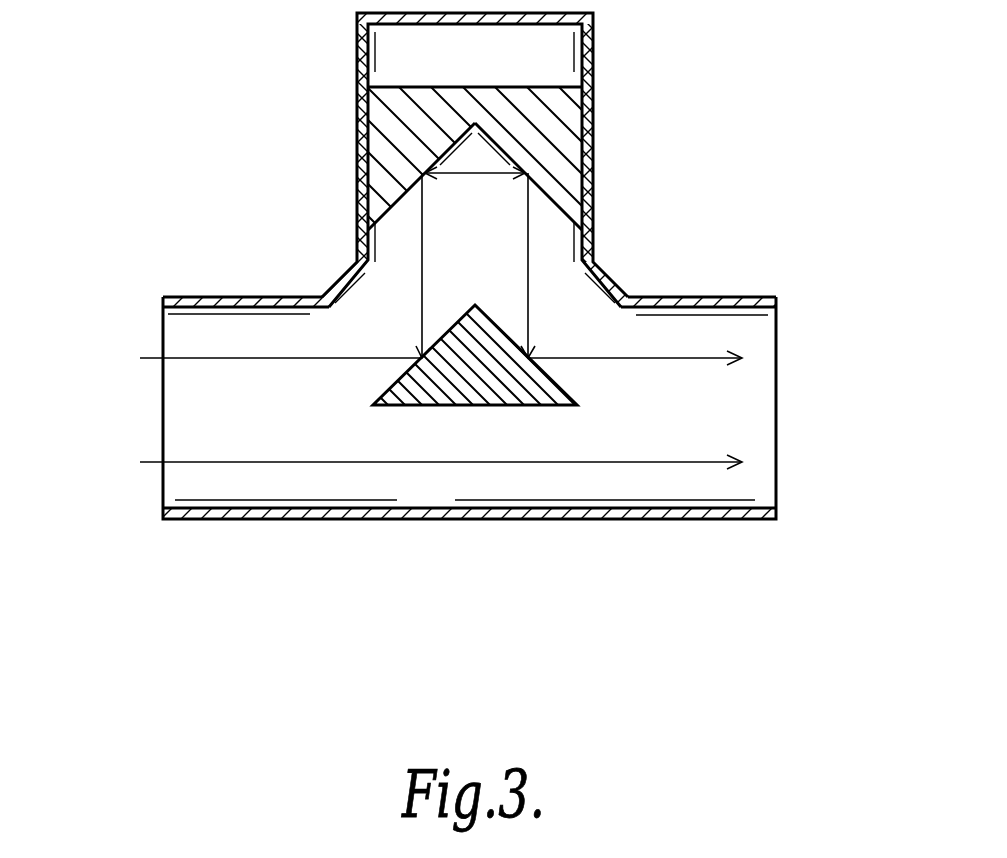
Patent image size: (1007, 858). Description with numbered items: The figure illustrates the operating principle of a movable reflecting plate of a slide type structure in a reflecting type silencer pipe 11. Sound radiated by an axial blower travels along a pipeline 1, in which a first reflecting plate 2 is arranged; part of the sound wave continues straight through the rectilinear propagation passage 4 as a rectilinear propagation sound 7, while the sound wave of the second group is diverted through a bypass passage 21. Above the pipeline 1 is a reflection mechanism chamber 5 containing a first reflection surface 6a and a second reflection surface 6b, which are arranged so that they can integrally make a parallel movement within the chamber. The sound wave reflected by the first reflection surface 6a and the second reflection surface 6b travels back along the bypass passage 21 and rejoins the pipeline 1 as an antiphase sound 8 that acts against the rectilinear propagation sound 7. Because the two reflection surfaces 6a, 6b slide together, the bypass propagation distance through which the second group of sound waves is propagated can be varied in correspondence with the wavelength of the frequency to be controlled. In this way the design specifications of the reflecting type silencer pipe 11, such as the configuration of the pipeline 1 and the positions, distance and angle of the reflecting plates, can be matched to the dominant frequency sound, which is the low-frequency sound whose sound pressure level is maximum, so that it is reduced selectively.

The pipeline 1 is at (226, 310).
The first reflecting plate 2 is at (400, 386).
The rectilinear propagation passage 4 is at (425, 483).
The reflection mechanism chamber 5 is at (382, 53).
The first reflection surface 6a is at (372, 206).
The second reflection surface 6b is at (578, 206).
The rectilinear propagation sound 7 is at (776, 462).
The antiphase sound 8 is at (742, 358).
The reflecting type silencer pipe 11 is at (697, 124).
The bypass passage 21 is at (325, 385).